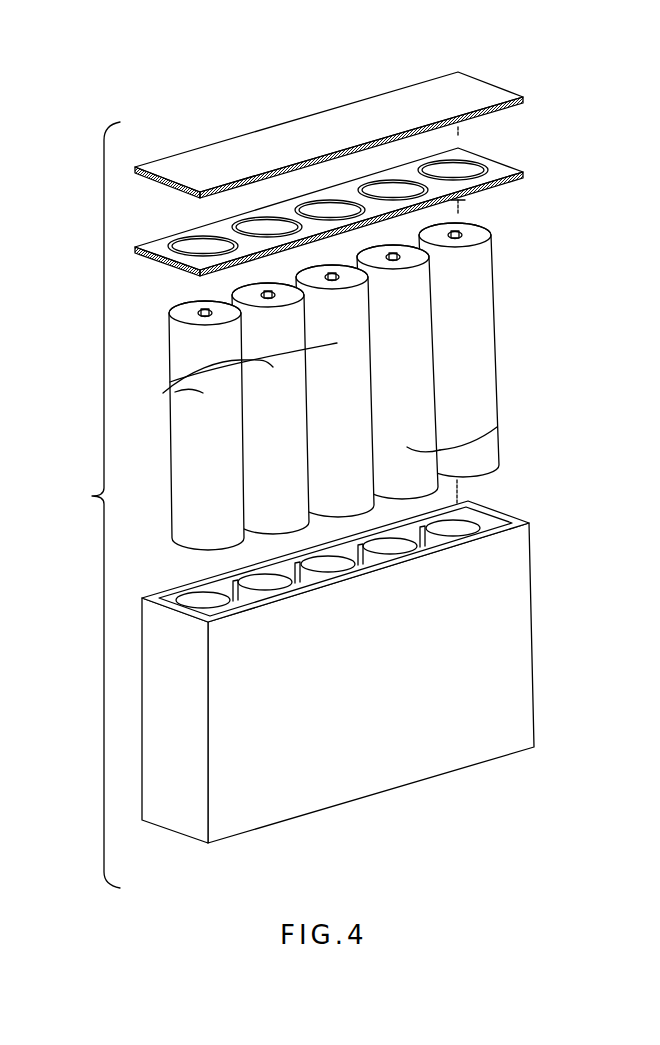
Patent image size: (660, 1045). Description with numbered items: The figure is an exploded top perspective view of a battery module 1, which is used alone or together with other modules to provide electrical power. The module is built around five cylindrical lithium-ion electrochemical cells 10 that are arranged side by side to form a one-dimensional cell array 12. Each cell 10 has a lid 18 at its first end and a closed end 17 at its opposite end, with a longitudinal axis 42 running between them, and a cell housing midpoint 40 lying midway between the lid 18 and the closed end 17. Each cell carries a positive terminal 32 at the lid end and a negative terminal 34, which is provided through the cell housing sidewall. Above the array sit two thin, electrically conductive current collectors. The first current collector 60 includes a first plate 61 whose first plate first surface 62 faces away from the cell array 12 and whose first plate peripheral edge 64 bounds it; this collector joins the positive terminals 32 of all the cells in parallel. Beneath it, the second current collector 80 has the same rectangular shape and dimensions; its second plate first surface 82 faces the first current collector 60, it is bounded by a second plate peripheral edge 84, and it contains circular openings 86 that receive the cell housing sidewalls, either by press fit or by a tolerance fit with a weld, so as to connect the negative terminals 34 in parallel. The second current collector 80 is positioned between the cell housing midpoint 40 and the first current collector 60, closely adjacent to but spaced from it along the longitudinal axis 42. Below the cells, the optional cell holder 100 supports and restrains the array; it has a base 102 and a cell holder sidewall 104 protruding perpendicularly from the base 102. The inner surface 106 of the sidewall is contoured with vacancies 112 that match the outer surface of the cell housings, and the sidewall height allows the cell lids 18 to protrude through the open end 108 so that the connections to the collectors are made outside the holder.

The battery module 1 is at (92, 496).
The electrochemical cell 10 is at (366, 360).
The cell array 12 is at (385, 386).
The closed end 17 is at (358, 386).
The lid 18 is at (477, 473).
The positive terminal 32 is at (262, 274).
The negative terminal 34 is at (170, 388).
The cell housing midpoint 40 is at (362, 386).
The longitudinal axis 42 is at (458, 203).
The first current collector 60 is at (351, 117).
The first plate 61 is at (329, 114).
The first plate first surface 62 is at (372, 100).
The first plate peripheral edge 64 is at (137, 182).
The second current collector 80 is at (369, 198).
The second plate first surface 82 is at (325, 198).
The second plate peripheral edge 84 is at (137, 258).
The openings 86 is at (200, 240).
The cell holder 100 is at (363, 672).
The base 102 is at (413, 787).
The cell holder sidewall 104 is at (513, 712).
The inner surface 106 is at (198, 597).
The open end 108 is at (532, 527).
The vacancies 112 is at (197, 580).